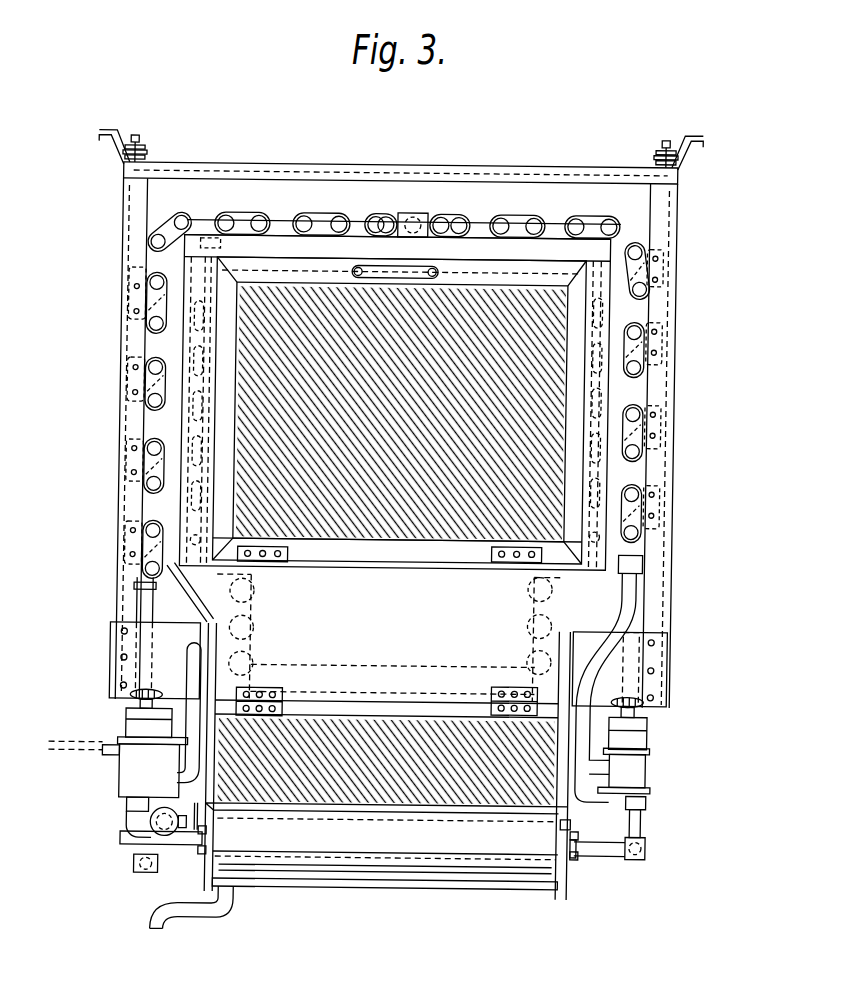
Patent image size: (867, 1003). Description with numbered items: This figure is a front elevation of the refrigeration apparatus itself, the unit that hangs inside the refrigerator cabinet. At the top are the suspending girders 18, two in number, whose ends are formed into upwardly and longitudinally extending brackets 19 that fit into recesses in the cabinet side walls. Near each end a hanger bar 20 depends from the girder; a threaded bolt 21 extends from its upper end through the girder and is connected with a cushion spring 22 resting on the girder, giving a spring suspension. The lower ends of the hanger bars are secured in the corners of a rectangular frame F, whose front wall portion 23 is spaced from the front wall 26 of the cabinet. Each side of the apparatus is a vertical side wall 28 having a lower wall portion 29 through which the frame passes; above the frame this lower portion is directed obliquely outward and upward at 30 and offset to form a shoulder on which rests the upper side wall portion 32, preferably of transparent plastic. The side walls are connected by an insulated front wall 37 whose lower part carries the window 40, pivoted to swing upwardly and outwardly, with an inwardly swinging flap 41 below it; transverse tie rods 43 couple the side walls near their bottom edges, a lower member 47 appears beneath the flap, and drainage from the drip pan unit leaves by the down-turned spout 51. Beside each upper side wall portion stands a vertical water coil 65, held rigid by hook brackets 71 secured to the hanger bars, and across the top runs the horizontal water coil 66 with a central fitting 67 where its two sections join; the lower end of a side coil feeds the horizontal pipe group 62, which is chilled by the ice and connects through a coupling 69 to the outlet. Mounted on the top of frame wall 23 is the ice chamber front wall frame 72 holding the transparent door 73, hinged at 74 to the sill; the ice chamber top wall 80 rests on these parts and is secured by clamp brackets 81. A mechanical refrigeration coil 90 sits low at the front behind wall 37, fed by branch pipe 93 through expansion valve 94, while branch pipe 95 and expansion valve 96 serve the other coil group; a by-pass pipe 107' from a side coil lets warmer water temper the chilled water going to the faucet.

The girder 18 is at (334, 167).
The bracket 19 is at (102, 140).
The hanger bar 20 is at (115, 215).
The threaded bolt 21 is at (128, 150).
The cushion spring 22 is at (140, 161).
The front wall portion 23 is at (639, 639).
The front wall 26 is at (447, 648).
The side wall 28 is at (578, 838).
The lower wall portion 29 is at (205, 827).
The oblique wall portion 30 is at (181, 597).
The upper side wall portion 32 is at (175, 418).
The front wall 37 is at (353, 590).
The window 40 is at (365, 730).
The flap 41 is at (520, 842).
The tie rod 43 is at (329, 888).
The guide rail 47 is at (433, 868).
The spout 51 is at (199, 915).
The horizontal pipe group 62 is at (355, 666).
The vertical water coil 65 is at (145, 323).
The horizontal water coil 66 is at (509, 221).
The roller block 67 is at (409, 214).
The coupling 69 is at (129, 823).
The hook bracket 71 is at (156, 284).
The ice chamber front wall frame 72 is at (274, 249).
The door 73 is at (330, 273).
The hinge 74 is at (258, 548).
The ice chamber top wall 80 is at (543, 237).
The clamp bracket 81 is at (190, 239).
The mechanical refrigeration coil 90 is at (253, 596).
The branch pipe 93 is at (622, 611).
The expansion valve 94 is at (642, 766).
The branch pipe 95 is at (182, 678).
The expansion valve 96 is at (126, 769).
The by-pass pipe 107' is at (115, 693).
The rectangular frame F is at (114, 651).